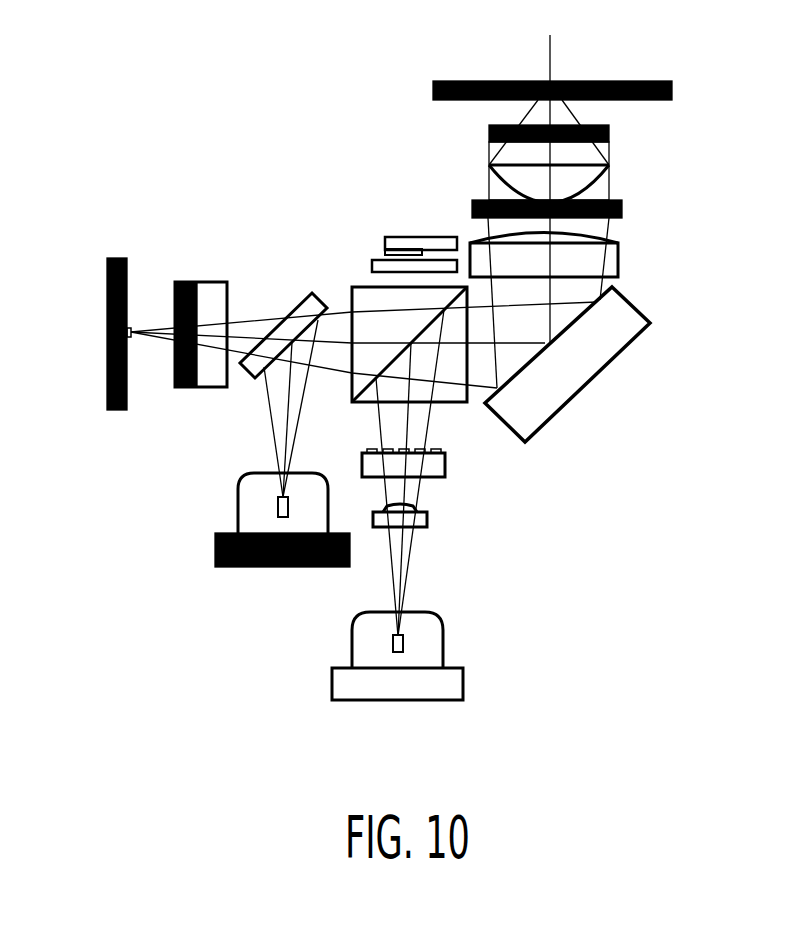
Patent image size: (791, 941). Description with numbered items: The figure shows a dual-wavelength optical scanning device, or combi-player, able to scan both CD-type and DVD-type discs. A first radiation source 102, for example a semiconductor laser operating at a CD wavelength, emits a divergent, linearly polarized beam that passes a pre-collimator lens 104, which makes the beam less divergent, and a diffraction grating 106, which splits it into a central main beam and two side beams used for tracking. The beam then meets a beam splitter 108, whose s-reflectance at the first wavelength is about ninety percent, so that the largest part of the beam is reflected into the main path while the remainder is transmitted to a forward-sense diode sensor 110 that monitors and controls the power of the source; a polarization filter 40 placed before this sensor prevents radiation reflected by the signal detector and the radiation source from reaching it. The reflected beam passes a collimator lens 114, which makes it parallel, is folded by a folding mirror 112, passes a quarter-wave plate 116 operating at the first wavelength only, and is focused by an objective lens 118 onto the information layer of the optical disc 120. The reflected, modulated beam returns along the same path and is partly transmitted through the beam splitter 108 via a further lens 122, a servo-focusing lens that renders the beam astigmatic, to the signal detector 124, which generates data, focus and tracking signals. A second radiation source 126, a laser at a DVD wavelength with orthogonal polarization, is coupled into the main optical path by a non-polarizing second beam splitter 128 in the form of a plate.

The polarization filter 40 is at (378, 258).
The first radiation source 102 is at (430, 692).
The pre-collimator lens 104 is at (427, 518).
The diffraction grating 106 is at (447, 468).
The beam splitter 108 is at (358, 287).
The forward-sense diode sensor 110 is at (415, 237).
The folding mirror 112 is at (590, 380).
The collimator lens 114 is at (618, 265).
The quarter-wave plate 116 is at (622, 212).
The objective lens 118 is at (609, 153).
The optical disc 120 is at (645, 81).
The further lens 122 is at (190, 390).
The signal detector 124 is at (107, 378).
The second radiation source 126 is at (240, 568).
The second beam splitter 128 is at (302, 293).